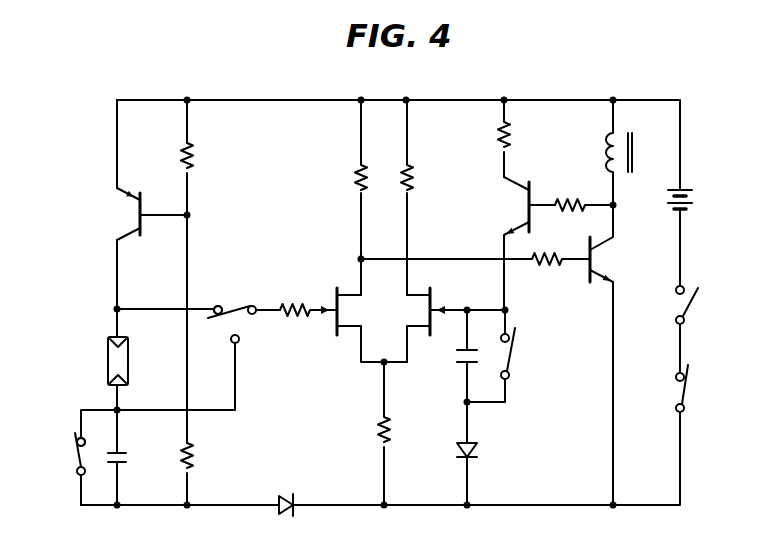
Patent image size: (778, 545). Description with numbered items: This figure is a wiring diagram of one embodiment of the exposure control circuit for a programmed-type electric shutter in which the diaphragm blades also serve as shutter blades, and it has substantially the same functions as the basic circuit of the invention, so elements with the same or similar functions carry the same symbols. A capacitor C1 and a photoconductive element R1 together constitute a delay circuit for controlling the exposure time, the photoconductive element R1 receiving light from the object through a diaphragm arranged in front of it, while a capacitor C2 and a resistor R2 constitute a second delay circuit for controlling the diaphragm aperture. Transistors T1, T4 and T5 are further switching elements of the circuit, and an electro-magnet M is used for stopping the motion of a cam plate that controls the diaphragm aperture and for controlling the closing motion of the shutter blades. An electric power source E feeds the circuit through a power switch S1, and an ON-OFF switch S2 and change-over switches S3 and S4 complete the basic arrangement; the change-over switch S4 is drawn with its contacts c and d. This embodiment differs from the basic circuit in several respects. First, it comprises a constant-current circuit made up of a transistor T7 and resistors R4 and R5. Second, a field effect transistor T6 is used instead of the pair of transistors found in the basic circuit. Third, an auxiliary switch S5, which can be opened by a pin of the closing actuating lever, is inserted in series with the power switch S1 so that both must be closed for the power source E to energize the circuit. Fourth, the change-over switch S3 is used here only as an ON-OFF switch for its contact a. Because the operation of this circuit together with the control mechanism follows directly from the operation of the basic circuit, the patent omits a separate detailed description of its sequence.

The transistor T7 is at (138, 196).
The resistor R4 is at (192, 150).
The resistor R5 is at (196, 462).
The photoconductive element R1 is at (108, 362).
The capacitor C1 is at (124, 455).
The change-over switch S3 is at (77, 450).
The contact a is at (88, 439).
The change-over switch S4 is at (240, 318).
The switch contact c is at (216, 300).
The switch contact d is at (178, 372).
The transistor T1 is at (334, 302).
The field effect transistor T6 is at (432, 303).
The capacitor C2 is at (459, 365).
The ON-OFF switch S2 is at (513, 346).
The resistor R2 is at (512, 127).
The transistor T5 is at (533, 194).
The transistor T4 is at (588, 276).
The electro-magnet M is at (635, 157).
The electric power source E is at (694, 202).
The power switch S1 is at (681, 306).
The auxiliary switch S5 is at (678, 398).